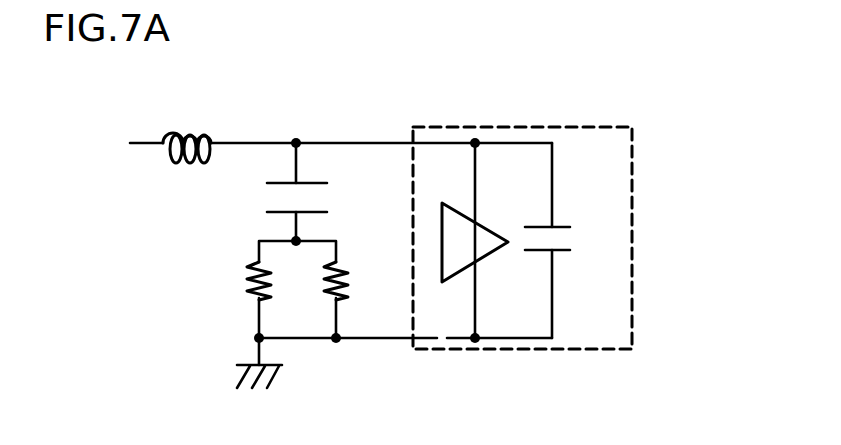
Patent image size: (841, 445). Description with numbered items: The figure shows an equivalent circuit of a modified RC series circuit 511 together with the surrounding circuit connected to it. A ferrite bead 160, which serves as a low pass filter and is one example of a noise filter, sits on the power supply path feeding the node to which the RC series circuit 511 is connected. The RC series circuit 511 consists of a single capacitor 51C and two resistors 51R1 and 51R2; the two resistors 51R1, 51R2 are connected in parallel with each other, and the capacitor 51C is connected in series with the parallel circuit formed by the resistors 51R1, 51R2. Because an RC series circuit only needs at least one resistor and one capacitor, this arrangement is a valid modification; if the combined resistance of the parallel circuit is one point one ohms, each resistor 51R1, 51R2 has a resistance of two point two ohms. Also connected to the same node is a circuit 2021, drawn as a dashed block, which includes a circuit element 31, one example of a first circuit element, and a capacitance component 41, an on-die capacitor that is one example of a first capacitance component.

The ferrite bead 160 is at (186, 127).
The circuit 2021 is at (634, 168).
The circuit element 31 is at (480, 222).
The capacitance component 41 is at (568, 238).
The RC series circuit 511 is at (180, 202).
The capacitor 51C is at (268, 202).
The resistor 51R1 is at (252, 270).
The resistor 51R2 is at (322, 283).